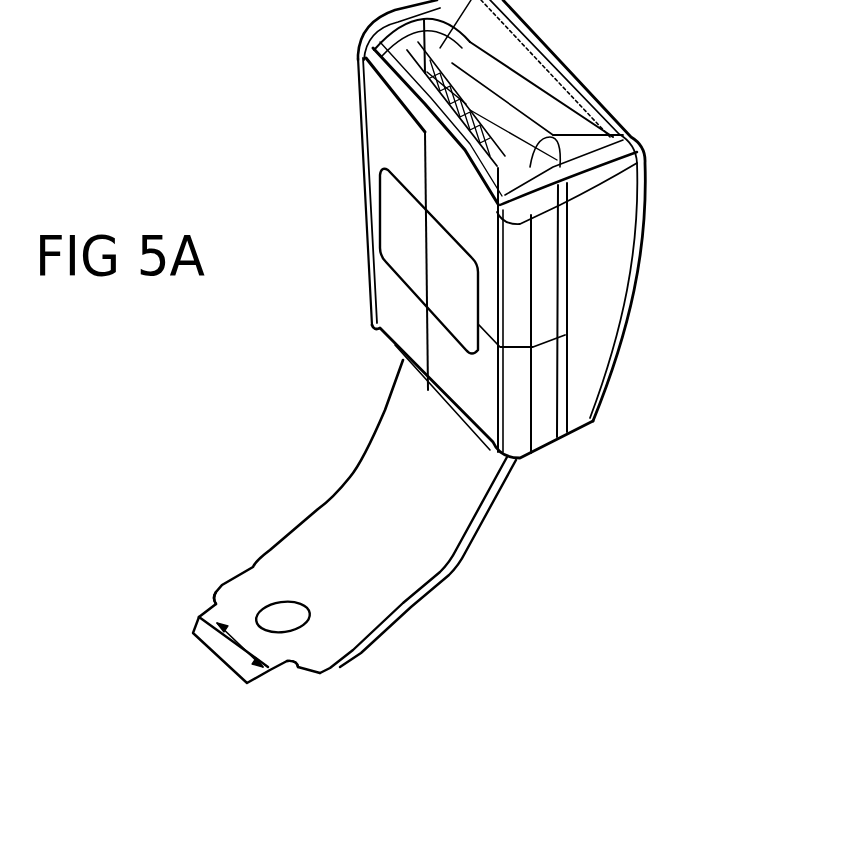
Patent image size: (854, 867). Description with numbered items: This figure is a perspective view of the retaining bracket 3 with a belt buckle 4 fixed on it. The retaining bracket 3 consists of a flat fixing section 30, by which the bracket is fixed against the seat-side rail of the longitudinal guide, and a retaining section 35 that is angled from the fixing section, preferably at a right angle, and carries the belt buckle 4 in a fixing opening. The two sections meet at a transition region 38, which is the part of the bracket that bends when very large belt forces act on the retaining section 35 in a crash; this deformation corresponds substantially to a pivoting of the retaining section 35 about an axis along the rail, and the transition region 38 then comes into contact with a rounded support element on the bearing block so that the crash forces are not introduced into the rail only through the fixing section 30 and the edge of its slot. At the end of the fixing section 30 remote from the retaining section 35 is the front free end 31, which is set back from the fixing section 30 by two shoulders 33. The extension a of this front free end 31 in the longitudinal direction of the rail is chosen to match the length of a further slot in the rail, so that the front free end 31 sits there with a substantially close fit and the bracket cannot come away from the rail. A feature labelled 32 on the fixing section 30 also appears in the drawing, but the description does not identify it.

The belt buckle 4 is at (648, 263).
The retaining bracket 3 is at (367, 561).
The fixing section 30 is at (347, 640).
The front free end 31 is at (233, 670).
The mounting hole 32 is at (287, 622).
The shoulders 33 is at (215, 602).
The retaining section 35 is at (493, 500).
The transition region 38 is at (413, 605).
The extension of the front free end a is at (215, 644).